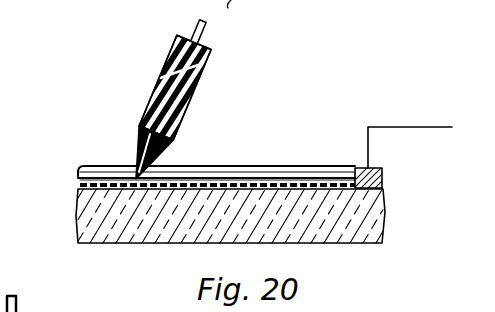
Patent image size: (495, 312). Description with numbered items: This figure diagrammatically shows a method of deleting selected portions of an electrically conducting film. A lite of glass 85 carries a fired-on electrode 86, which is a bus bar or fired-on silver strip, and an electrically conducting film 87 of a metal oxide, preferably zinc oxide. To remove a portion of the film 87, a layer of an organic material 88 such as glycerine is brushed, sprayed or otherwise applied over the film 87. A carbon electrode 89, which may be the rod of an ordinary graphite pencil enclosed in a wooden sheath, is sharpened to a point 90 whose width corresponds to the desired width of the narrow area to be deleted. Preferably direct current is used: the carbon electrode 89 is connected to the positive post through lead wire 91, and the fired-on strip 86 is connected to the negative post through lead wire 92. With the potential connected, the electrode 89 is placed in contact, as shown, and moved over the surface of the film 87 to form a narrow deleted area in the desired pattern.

The lite of glass 85 is at (88, 216).
The fired-on electrode 86 is at (383, 177).
The electrically conducting film 87 is at (78, 183).
The layer of organic material 88 is at (160, 176).
The carbon electrode 89 is at (160, 88).
The point 90 is at (135, 175).
The lead wire 91 is at (233, 31).
The lead wire 92 is at (412, 127).